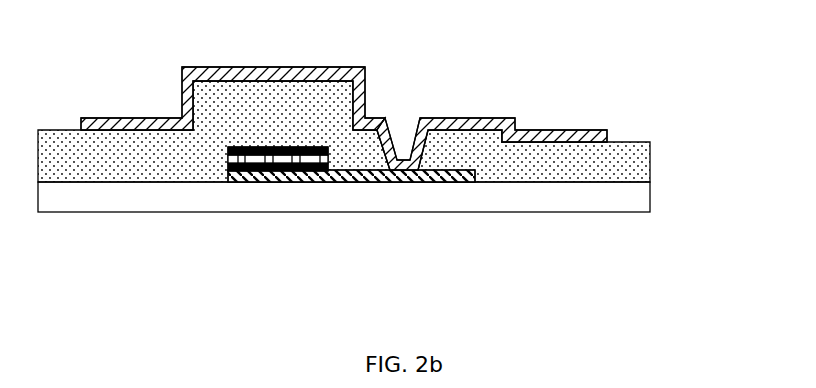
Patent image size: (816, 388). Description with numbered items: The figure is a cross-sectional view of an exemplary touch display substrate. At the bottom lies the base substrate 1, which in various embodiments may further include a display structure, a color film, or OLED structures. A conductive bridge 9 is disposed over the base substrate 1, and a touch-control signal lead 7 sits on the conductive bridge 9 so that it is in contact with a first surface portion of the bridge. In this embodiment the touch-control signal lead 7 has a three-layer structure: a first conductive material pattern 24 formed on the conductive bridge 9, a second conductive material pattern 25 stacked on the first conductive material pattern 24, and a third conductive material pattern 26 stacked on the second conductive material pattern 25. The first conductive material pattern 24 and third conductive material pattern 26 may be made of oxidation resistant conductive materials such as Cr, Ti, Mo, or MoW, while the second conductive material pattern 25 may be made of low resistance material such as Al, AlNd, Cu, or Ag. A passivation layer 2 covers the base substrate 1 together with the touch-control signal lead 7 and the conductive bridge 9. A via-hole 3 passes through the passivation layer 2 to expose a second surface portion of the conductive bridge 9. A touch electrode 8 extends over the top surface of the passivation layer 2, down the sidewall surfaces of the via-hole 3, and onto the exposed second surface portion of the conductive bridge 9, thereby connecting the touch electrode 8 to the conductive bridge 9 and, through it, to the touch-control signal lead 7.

The base substrate 1 is at (628, 198).
The passivation layer 2 is at (628, 162).
The via-hole 3 is at (405, 150).
The touch-control signal lead 7 is at (279, 222).
The touch electrode 8 is at (595, 133).
The conductive bridge 9 is at (414, 182).
The first conductive material pattern 24 is at (235, 255).
The second conductive material pattern 25 is at (283, 160).
The third conductive material pattern 26 is at (246, 168).